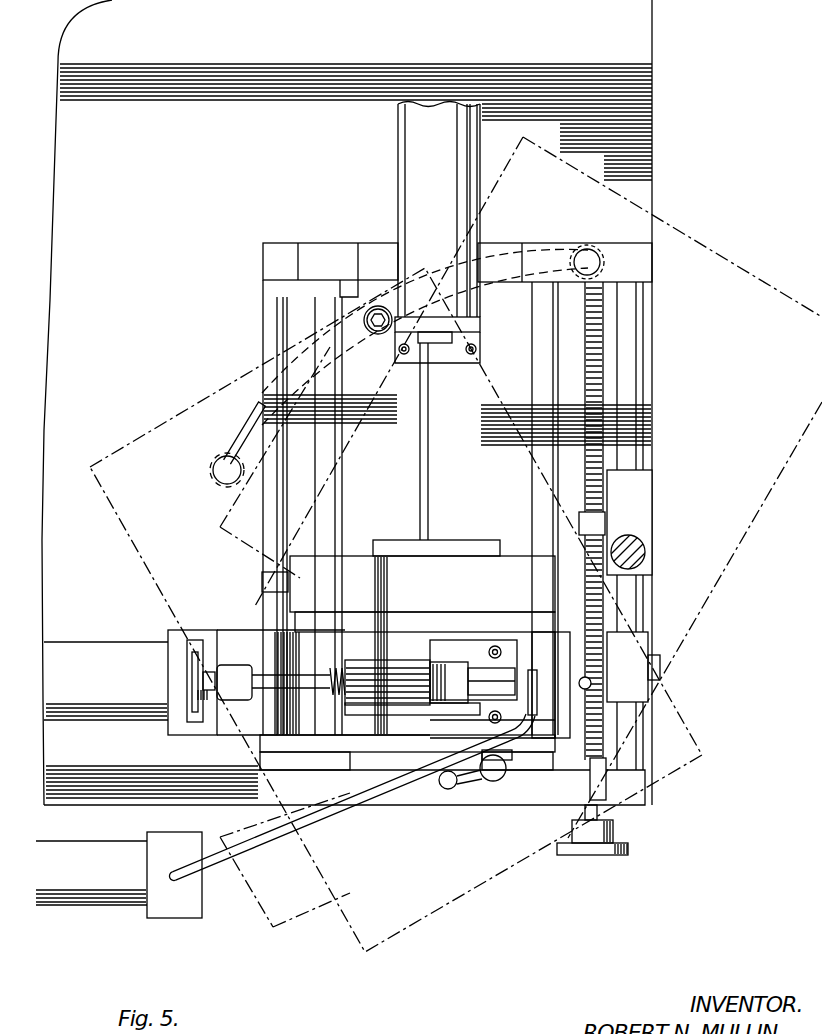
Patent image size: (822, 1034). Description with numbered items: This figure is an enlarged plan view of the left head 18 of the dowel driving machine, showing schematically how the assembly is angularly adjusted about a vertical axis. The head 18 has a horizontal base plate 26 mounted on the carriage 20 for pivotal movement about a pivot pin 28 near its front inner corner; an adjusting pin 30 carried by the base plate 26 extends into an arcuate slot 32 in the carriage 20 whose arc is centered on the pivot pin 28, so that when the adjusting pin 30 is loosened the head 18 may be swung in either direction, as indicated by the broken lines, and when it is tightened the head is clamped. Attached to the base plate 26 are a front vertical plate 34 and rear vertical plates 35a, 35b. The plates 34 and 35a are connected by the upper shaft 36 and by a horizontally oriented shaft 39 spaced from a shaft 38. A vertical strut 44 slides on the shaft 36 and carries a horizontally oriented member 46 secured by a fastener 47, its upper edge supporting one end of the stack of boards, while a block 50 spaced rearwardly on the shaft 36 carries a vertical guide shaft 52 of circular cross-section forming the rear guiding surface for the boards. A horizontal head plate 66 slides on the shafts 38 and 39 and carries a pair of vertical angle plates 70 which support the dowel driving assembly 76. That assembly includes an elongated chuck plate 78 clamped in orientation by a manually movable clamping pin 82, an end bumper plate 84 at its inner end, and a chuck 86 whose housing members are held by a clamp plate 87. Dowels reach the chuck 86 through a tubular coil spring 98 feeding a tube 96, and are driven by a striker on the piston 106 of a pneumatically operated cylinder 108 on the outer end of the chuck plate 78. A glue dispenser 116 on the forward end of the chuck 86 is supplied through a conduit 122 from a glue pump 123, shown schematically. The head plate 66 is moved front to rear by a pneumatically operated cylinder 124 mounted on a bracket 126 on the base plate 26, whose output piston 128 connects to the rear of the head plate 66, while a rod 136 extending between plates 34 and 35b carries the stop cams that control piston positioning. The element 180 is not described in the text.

The carriage 20 is at (653, 44).
The head 18 is at (262, 336).
The base plate 26 is at (262, 350).
The pivot pin 28 is at (591, 683).
The adjusting pin 30 is at (376, 306).
The arcuate slot 32 is at (246, 432).
The front vertical plate 34 is at (645, 802).
The rear vertical plate 35a is at (626, 247).
The rear vertical plate 35b is at (326, 247).
The upper shaft 36 is at (636, 335).
The shaft 38 is at (318, 313).
The horizontally oriented shaft 39 is at (532, 363).
The vertical strut 44 is at (643, 643).
The horizontally oriented member 46 is at (590, 778).
The fastener 47 is at (660, 668).
The block 50 is at (645, 487).
The vertical guide shaft 52 is at (645, 548).
The head plate 66 is at (356, 557).
The vertical angle plate 70 is at (468, 600).
The dowel driving assembly 76 is at (370, 665).
The chuck plate 78 is at (225, 732).
The clamping pin 82 is at (492, 782).
The end bumper plate 84 is at (567, 636).
The chuck 86 is at (480, 662).
The clamp plate 87 is at (431, 638).
The tube 96 is at (392, 706).
The tubular coil spring 98 is at (340, 668).
The piston 106 is at (203, 682).
The pneumatically operated cylinder 108 is at (112, 628).
The glue dispenser 116 is at (532, 670).
The conduit 122 is at (300, 815).
The glue pump 123 is at (105, 905).
The pneumatically operated cylinder 124 is at (398, 143).
The bracket 126 is at (480, 333).
The output piston 128 is at (420, 478).
The rod 136 is at (268, 581).
The top plate 180 is at (463, 541).